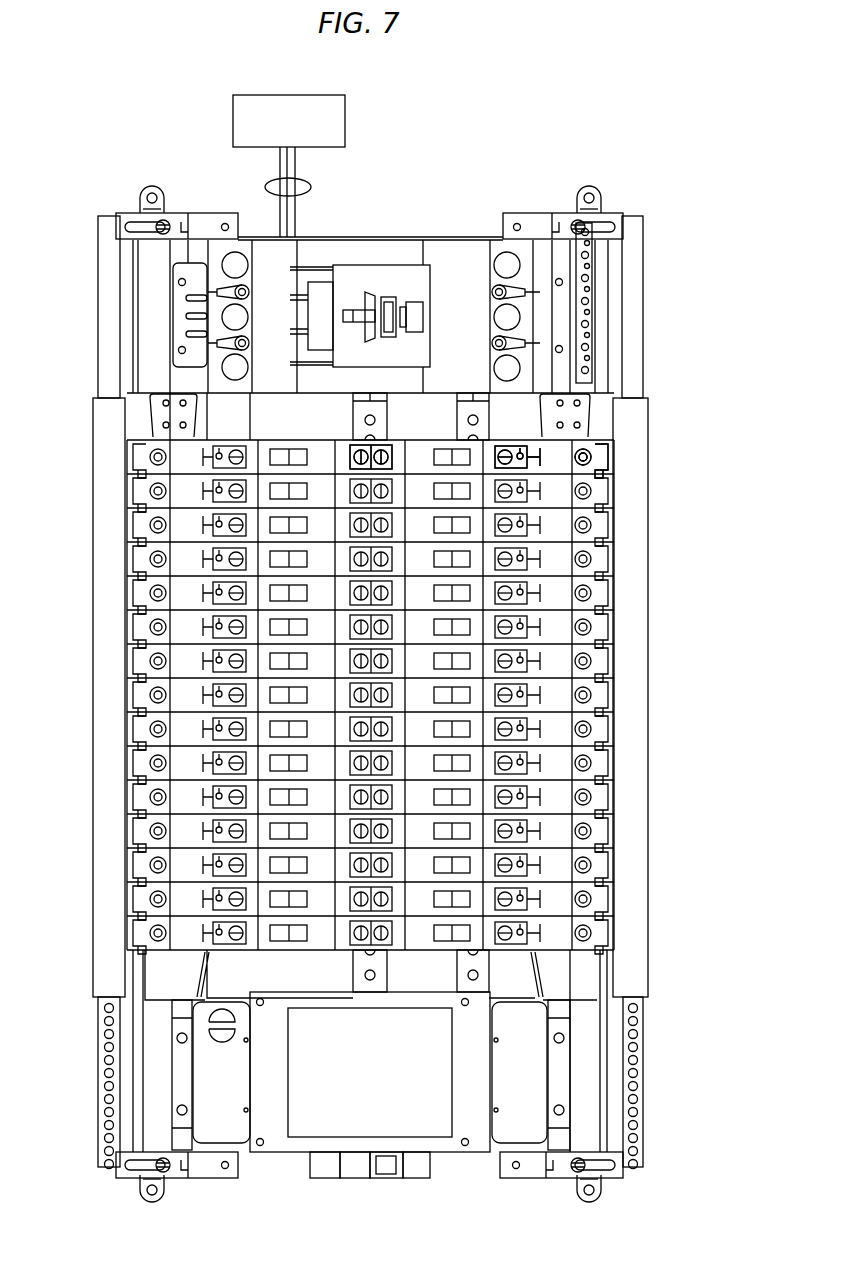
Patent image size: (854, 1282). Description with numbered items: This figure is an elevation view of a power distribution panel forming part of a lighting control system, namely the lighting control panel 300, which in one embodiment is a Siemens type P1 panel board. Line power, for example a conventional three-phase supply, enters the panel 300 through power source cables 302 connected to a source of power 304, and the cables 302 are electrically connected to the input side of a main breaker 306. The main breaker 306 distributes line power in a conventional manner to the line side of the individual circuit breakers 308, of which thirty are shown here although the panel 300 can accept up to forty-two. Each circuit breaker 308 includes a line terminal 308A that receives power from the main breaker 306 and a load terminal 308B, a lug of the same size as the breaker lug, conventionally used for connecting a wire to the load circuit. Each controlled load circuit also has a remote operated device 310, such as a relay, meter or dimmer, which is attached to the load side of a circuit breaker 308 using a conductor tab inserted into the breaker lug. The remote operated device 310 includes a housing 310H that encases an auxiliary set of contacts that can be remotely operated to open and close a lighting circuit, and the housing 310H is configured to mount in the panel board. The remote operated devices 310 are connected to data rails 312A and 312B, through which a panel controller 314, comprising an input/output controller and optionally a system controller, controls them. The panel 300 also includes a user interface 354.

The lighting control panel 300 is at (514, 146).
The power source cables 302 is at (312, 188).
The source of power 304 is at (345, 120).
The main breaker 306 is at (390, 277).
The individual circuit breakers 308 is at (475, 446).
The line terminal 308A is at (392, 455).
The load terminal 308B is at (498, 454).
The remote operated device 310 is at (594, 457).
The housing 310H is at (548, 466).
The data rail 312A is at (648, 828).
The data rail 312B is at (93, 831).
The panel controller 314 is at (450, 1143).
The user interface 354 is at (400, 1089).